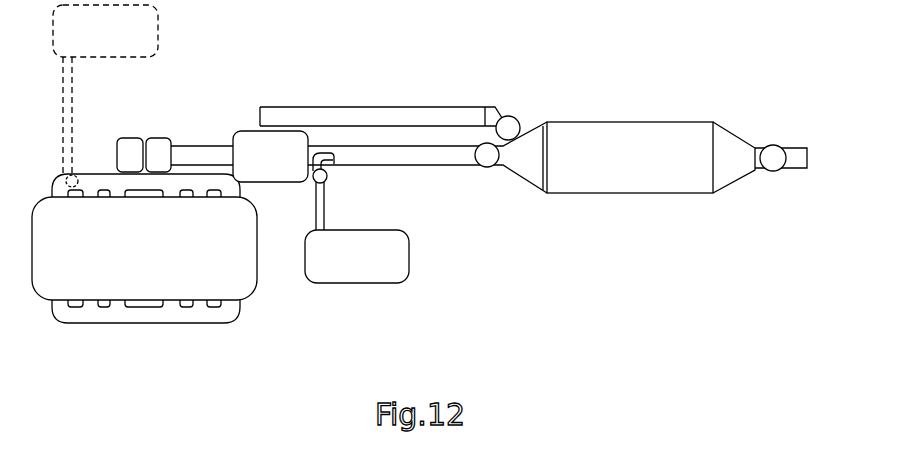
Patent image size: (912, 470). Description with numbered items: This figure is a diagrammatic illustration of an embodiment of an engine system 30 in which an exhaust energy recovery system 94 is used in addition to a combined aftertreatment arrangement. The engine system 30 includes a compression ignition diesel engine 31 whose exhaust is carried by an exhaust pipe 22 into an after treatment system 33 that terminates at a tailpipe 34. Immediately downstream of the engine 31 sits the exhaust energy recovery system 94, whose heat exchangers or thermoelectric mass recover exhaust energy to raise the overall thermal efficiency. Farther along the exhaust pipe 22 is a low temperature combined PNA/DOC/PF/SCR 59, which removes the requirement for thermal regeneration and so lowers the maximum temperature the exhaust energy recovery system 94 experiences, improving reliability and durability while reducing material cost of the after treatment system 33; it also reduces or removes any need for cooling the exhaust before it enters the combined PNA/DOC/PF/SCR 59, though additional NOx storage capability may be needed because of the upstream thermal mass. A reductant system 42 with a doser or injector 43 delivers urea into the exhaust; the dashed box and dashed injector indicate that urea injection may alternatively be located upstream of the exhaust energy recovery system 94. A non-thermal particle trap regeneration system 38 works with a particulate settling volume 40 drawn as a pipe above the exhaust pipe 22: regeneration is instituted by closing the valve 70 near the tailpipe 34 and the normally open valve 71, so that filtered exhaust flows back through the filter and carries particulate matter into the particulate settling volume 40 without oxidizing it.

The engine system 30 is at (484, 32).
The compression ignition diesel engine 31 is at (260, 300).
The exhaust pipe 22 is at (463, 175).
The after treatment system 33 is at (495, 246).
The tailpipe 34 is at (780, 146).
The non-thermal particle trap regeneration system 38 is at (518, 112).
The particulate settling volume 40 is at (427, 99).
The reductant system 42 is at (133, 58).
The doser or injector 43 is at (74, 180).
The combined PNA/DOC/PF/SCR 59 is at (668, 118).
The valve 70 is at (773, 171).
The normally open valve 71 is at (485, 167).
The exhaust energy recovery system 94 is at (252, 188).